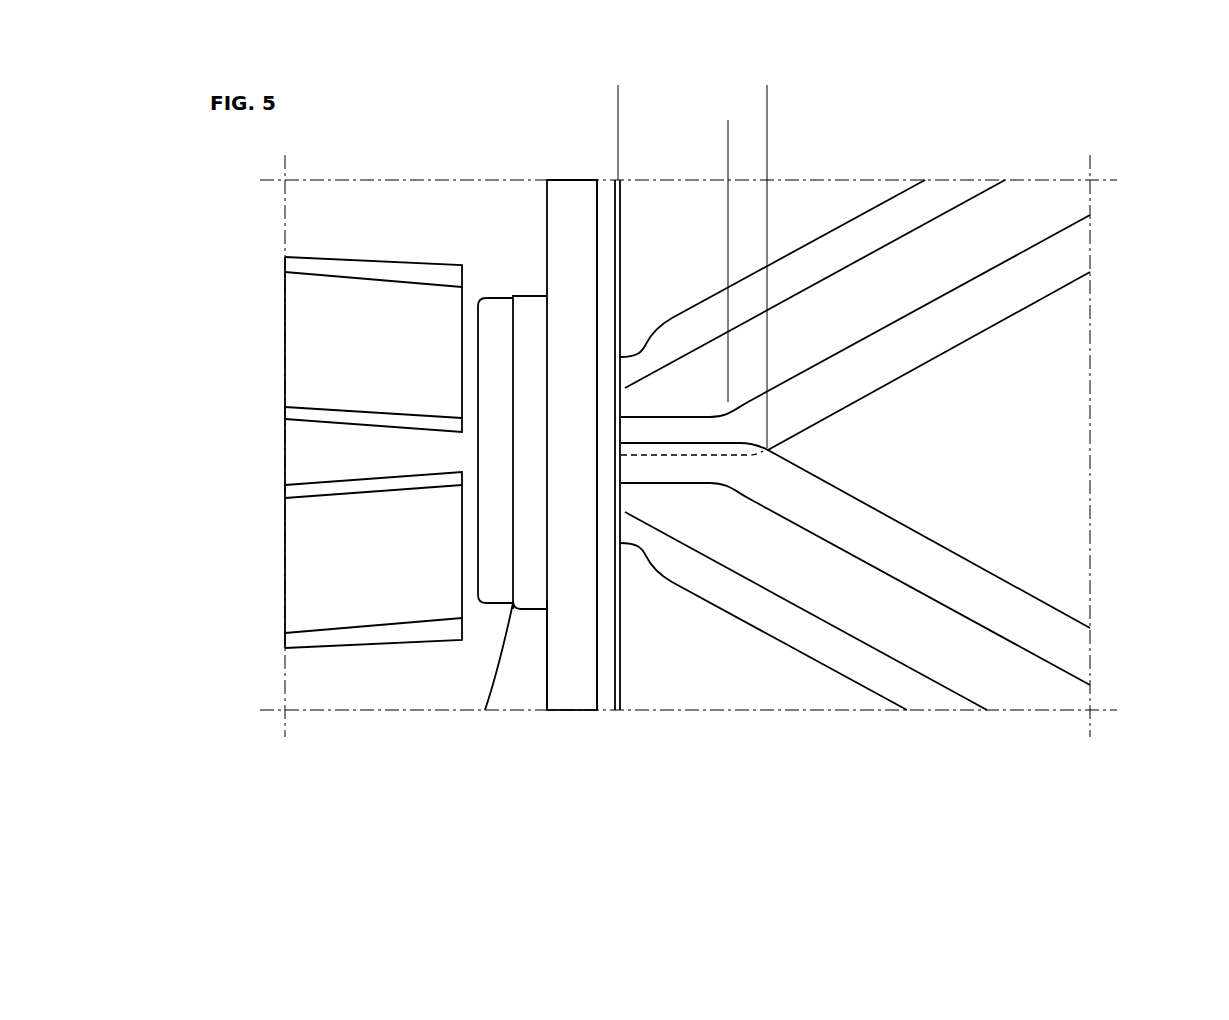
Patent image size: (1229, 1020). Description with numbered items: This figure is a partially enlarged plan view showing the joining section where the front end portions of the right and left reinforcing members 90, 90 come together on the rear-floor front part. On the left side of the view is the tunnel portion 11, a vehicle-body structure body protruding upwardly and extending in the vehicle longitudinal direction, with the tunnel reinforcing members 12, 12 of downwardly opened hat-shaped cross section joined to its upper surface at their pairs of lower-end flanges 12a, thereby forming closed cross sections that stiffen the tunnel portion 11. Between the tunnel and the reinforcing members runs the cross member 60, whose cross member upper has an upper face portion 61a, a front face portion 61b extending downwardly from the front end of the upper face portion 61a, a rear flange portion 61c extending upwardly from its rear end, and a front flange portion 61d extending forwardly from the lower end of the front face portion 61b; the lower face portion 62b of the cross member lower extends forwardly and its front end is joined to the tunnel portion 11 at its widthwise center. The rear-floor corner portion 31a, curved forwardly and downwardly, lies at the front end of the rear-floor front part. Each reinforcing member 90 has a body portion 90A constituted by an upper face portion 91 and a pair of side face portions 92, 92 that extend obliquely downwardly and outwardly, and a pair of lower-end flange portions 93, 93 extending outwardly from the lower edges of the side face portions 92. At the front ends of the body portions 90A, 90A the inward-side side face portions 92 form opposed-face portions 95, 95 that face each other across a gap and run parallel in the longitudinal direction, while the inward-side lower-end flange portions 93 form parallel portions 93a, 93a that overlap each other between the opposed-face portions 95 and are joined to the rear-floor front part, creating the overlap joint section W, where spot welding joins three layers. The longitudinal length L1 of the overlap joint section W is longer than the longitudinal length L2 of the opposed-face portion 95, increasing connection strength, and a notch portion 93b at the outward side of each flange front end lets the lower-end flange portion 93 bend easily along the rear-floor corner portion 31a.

The tunnel portion 11 is at (298, 455).
The tunnel reinforcing member 12 is at (305, 344).
The lower-end flange 12a is at (310, 260).
The rear-floor corner portion 31a is at (662, 685).
The cross member 60 is at (568, 712).
The upper face portion 61a is at (573, 190).
The front face portion 61b is at (547, 687).
The rear flange portion 61c is at (609, 700).
The front flange portion 61d is at (533, 313).
The lower face portion 62b is at (493, 333).
The reinforcing member 90 is at (1108, 603).
The body portion 90A is at (918, 287).
The upper face portion 91 is at (1015, 203).
The side face portion 92 is at (950, 210).
The lower-end flange portion 93 is at (885, 207).
The parallel portion 93a is at (650, 430).
The notch portion 93b is at (637, 353).
The opposed-face portion 95 is at (683, 415).
The overlap joint section W is at (803, 447).
The longitudinal length of the overlap joint section L1 is at (619, 93).
The longitudinal length of the opposed-face portion L2 is at (619, 128).